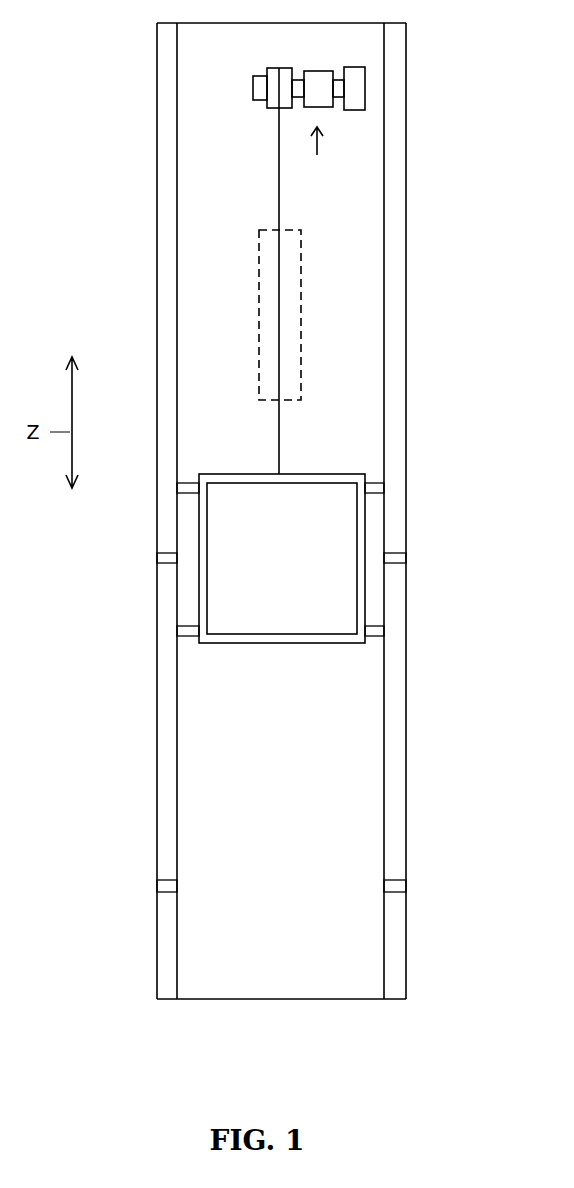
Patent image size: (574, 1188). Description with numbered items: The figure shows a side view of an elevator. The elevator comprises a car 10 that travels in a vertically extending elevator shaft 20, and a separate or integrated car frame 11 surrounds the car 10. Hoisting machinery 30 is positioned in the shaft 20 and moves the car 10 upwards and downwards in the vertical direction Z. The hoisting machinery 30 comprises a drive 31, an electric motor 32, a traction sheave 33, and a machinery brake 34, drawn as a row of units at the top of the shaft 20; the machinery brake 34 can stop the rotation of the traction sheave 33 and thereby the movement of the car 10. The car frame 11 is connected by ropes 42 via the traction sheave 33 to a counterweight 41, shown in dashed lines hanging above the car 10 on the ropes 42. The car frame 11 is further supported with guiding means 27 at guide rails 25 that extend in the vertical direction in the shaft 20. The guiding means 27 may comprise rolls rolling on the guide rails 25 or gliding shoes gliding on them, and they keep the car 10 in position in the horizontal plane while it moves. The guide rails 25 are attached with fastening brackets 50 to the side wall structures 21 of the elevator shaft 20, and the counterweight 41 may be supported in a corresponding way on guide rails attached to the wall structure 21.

The car 10 is at (268, 564).
The car frame 11 is at (297, 646).
The elevator shaft 20 is at (268, 818).
The side wall structures 21 is at (157, 245).
The guide rails 25 is at (177, 310).
The guiding means 27 is at (180, 489).
The hoisting machinery 30 is at (317, 156).
The drive 31 is at (350, 102).
The electric motor 32 is at (318, 72).
The traction sheave 33 is at (284, 69).
The machinery brake 34 is at (262, 76).
The counterweight 41 is at (301, 310).
The ropes 42 is at (279, 190).
The fastening brackets 50 is at (160, 559).